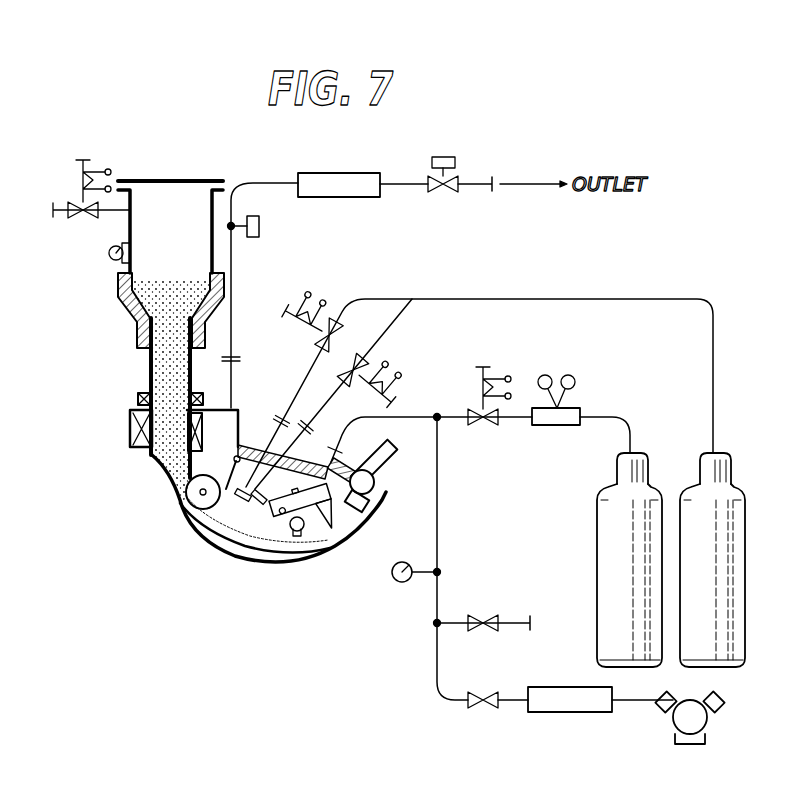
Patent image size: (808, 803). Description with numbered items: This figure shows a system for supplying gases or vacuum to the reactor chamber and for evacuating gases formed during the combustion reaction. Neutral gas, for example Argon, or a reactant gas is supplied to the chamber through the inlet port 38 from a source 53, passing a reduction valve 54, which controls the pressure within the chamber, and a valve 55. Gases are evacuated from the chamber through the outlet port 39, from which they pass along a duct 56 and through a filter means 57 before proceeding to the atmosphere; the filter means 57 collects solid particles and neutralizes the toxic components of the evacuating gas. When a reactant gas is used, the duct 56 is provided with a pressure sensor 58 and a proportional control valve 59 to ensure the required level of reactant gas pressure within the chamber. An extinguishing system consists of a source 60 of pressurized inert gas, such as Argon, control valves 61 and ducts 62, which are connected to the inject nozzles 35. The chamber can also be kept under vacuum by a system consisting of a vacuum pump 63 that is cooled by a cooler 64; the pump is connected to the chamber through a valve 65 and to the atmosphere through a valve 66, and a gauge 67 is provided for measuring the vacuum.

The inject nozzles 35 is at (240, 497).
The inlet port 38 is at (331, 444).
The outlet port 39 is at (231, 398).
The source 53 is at (612, 567).
The reduction valve 54 is at (557, 426).
The valve 55 is at (486, 430).
The duct 56 is at (270, 183).
The filter means 57 is at (354, 173).
The pressure sensor 58 is at (259, 227).
The proportional control valve 59 is at (447, 157).
The source of pressurized inert gas 60 is at (744, 573).
The control valves 61 is at (340, 337).
The ducts 62 is at (322, 410).
The vacuum pump 63 is at (706, 722).
The cooler 64 is at (566, 713).
The valve 65 is at (488, 706).
The valve 66 is at (483, 615).
The gauge 67 is at (392, 571).